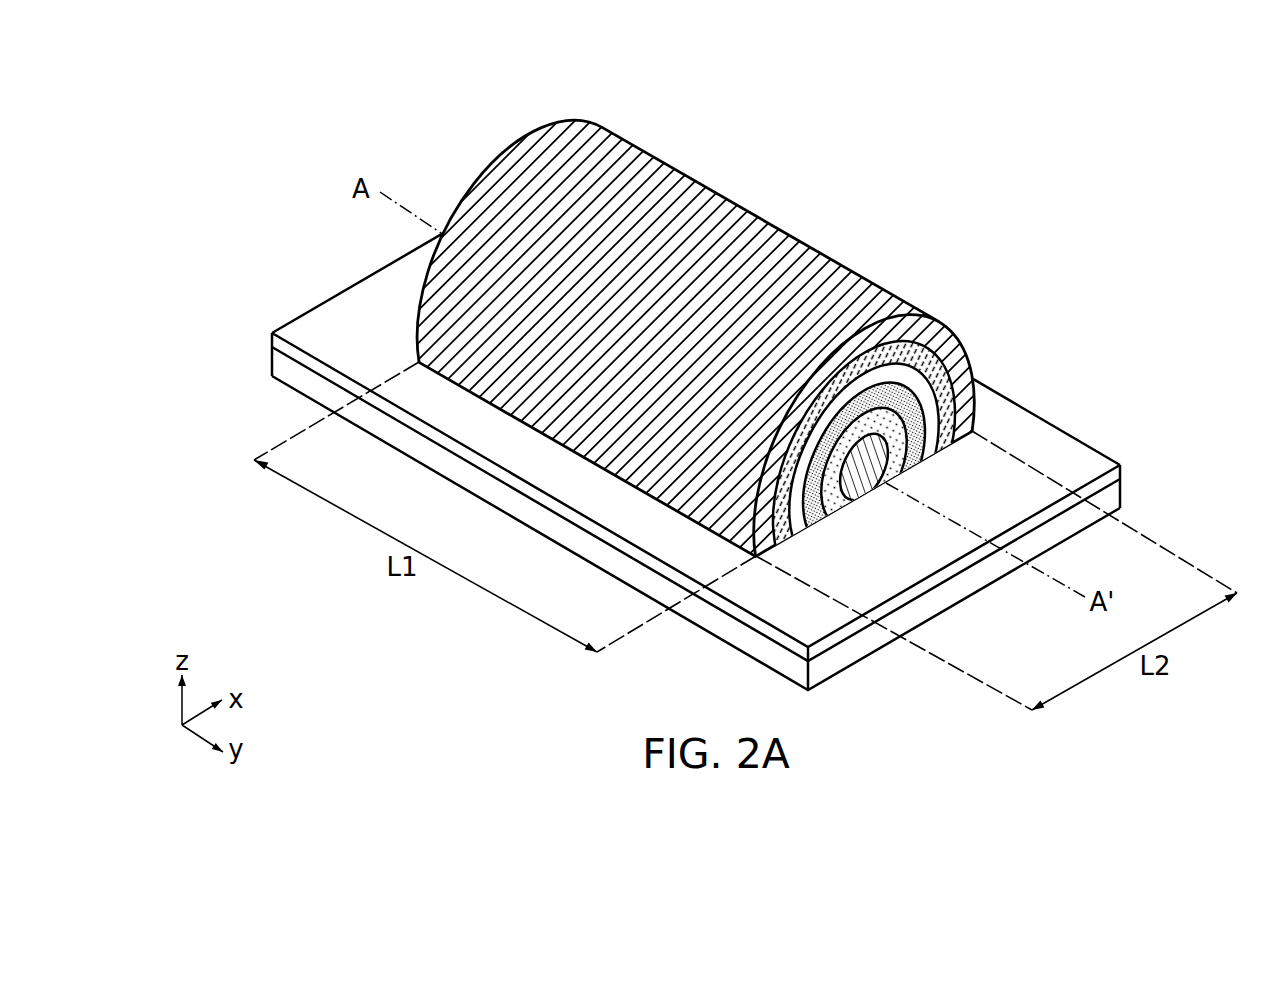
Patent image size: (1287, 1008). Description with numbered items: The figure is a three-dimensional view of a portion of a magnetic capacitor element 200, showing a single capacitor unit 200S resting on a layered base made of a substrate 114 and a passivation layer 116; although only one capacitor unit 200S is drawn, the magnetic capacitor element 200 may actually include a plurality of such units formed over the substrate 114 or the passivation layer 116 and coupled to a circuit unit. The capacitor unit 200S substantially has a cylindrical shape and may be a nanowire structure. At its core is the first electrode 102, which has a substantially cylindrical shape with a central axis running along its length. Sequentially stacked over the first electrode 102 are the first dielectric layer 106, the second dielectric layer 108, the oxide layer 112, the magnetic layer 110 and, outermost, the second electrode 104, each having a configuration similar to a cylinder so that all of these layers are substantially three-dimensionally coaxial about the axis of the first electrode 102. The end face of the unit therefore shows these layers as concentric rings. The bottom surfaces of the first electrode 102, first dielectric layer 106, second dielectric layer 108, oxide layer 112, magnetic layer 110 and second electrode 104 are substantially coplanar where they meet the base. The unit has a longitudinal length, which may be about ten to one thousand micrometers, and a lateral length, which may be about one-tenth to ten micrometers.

The magnetic capacitor element 200 is at (195, 112).
The capacitor unit 200S is at (495, 143).
The first electrode 102 is at (874, 486).
The second electrode 104 is at (948, 343).
The first dielectric layer 106 is at (895, 443).
The second dielectric layer 108 is at (917, 423).
The magnetic layer 110 is at (945, 375).
The oxide layer 112 is at (935, 400).
The substrate 114 is at (1112, 496).
The passivation layer 116 is at (1120, 473).